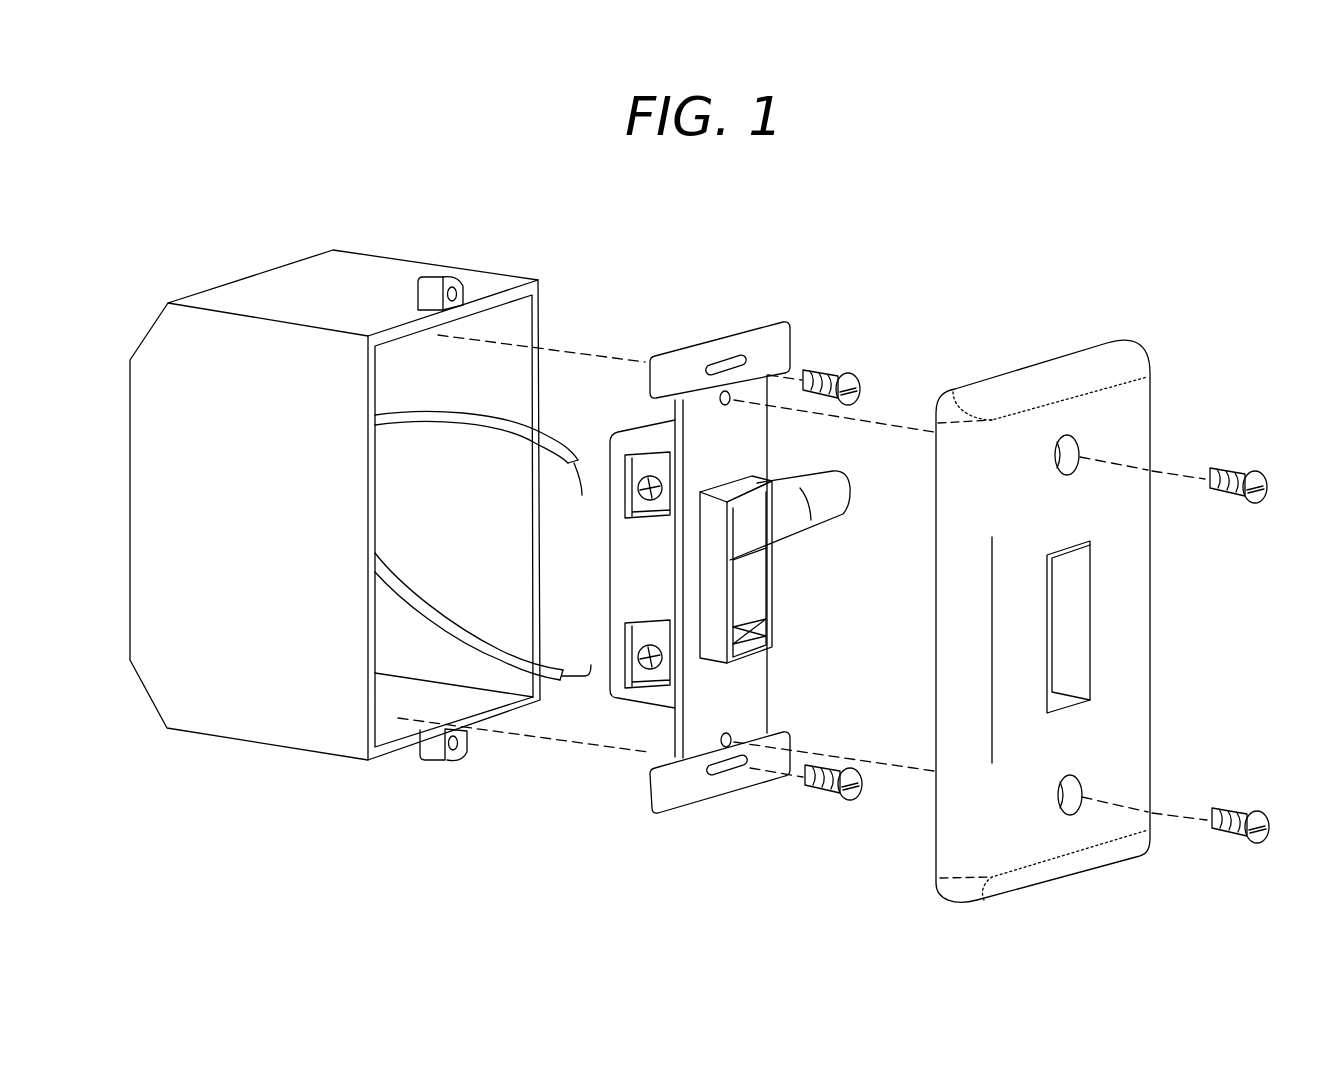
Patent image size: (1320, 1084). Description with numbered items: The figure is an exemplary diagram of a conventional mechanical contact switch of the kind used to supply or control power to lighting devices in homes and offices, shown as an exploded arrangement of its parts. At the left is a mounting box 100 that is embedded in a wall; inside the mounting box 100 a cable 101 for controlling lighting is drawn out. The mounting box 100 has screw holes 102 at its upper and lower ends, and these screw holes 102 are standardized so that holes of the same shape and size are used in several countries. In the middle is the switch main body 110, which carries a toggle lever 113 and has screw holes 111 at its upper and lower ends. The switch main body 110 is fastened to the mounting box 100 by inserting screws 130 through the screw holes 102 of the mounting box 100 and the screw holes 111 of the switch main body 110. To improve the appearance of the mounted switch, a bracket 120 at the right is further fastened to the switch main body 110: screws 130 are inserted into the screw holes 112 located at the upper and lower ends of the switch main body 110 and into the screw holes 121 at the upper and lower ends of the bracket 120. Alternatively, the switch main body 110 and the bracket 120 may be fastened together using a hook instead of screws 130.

The mounting box 100 is at (387, 272).
The cable 101 is at (492, 435).
The screw holes 102 is at (452, 279).
The switch main body 110 is at (769, 549).
The screw holes 111 is at (738, 360).
The screw holes 112 is at (725, 407).
The toggle lever 113 is at (855, 503).
The bracket 120 is at (1043, 591).
The screw holes 121 is at (1060, 477).
The screws 130 is at (845, 372).